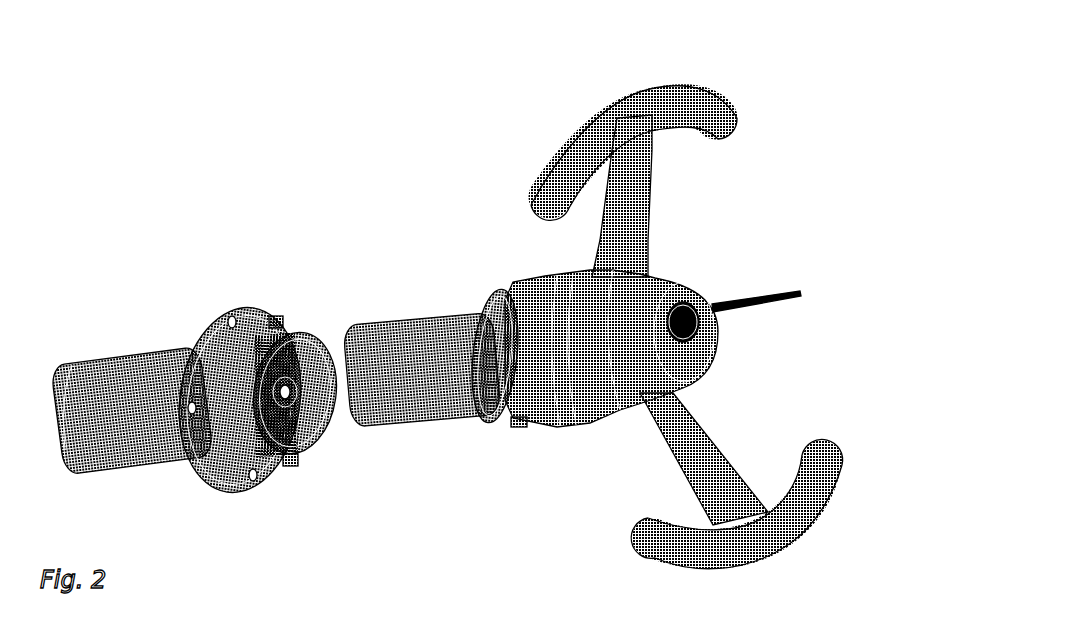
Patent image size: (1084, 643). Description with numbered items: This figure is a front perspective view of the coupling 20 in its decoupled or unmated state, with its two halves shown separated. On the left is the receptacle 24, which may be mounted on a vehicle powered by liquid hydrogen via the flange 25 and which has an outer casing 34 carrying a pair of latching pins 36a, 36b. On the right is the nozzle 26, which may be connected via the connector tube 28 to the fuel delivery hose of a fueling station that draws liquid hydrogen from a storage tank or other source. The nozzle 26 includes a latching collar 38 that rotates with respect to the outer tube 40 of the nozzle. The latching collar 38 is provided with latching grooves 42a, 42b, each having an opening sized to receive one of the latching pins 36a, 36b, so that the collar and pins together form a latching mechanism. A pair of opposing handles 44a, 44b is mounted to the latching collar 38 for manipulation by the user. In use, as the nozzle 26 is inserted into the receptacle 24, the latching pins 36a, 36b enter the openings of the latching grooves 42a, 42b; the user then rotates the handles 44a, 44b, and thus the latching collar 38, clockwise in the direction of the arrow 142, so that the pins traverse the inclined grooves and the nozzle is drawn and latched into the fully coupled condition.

The coupling 20 is at (351, 159).
The receptacle 24 is at (137, 297).
The flange 25 is at (220, 490).
The nozzle 26 is at (779, 171).
The connector tube 28 is at (717, 331).
The outer casing 34 is at (147, 473).
The latching pin 36a is at (274, 320).
The latching pin 36b is at (294, 465).
The latching collar 38 is at (593, 428).
The outer tube 40 is at (447, 423).
The latching groove 42a is at (507, 290).
The latching groove 42b is at (520, 423).
The handle 44a is at (652, 86).
The handle 44b is at (703, 573).
The arrow 142 is at (611, 45).